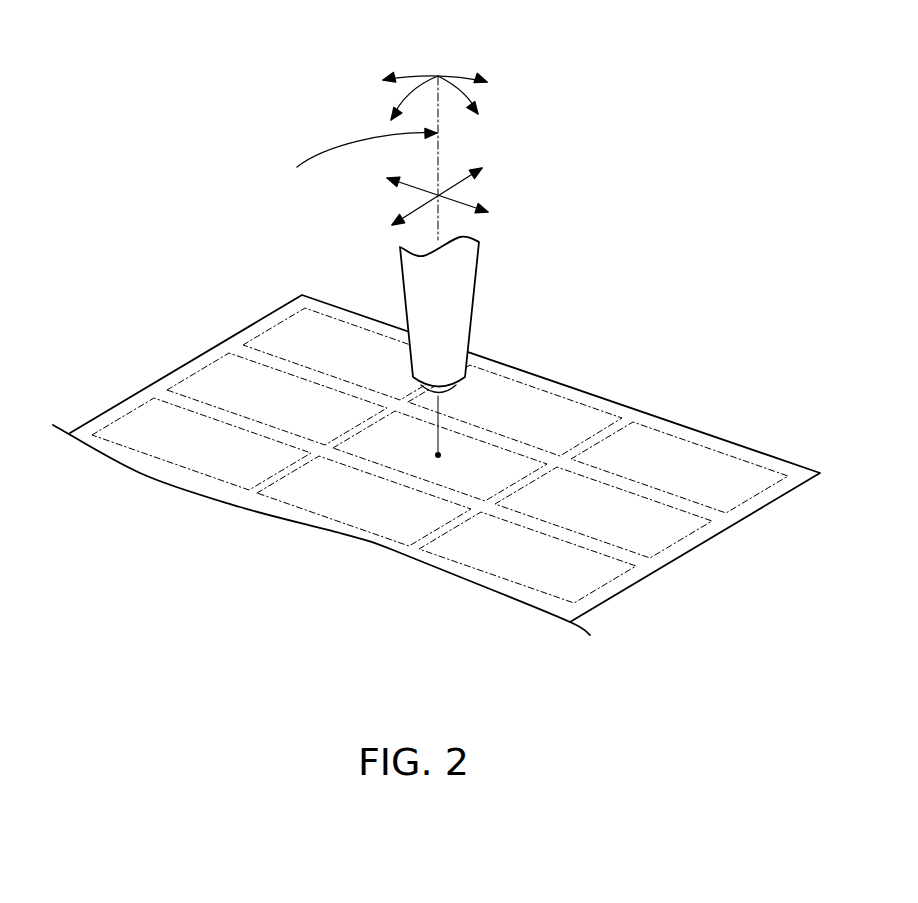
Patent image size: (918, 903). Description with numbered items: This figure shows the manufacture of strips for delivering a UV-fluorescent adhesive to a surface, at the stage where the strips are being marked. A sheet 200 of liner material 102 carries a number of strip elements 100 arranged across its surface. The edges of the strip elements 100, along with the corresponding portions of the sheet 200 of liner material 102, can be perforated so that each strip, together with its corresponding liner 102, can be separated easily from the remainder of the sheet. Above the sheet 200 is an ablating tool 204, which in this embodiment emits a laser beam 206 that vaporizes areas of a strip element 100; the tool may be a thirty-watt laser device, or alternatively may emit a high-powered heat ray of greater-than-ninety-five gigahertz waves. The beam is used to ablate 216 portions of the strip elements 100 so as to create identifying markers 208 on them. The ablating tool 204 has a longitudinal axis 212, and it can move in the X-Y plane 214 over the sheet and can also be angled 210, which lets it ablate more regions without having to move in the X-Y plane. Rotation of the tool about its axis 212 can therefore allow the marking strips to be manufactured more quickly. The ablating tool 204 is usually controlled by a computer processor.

The strip element 100 is at (592, 410).
The liner material 102 is at (108, 404).
The sheet 200 is at (426, 362).
The ablating tool 204 is at (470, 290).
The laser beam 206 is at (438, 436).
The identifying marker 208 is at (645, 522).
The angling 210 is at (483, 57).
The longitudinal axis 212 is at (345, 160).
The X-Y plane 214 is at (488, 153).
The ablating 216 is at (432, 460).